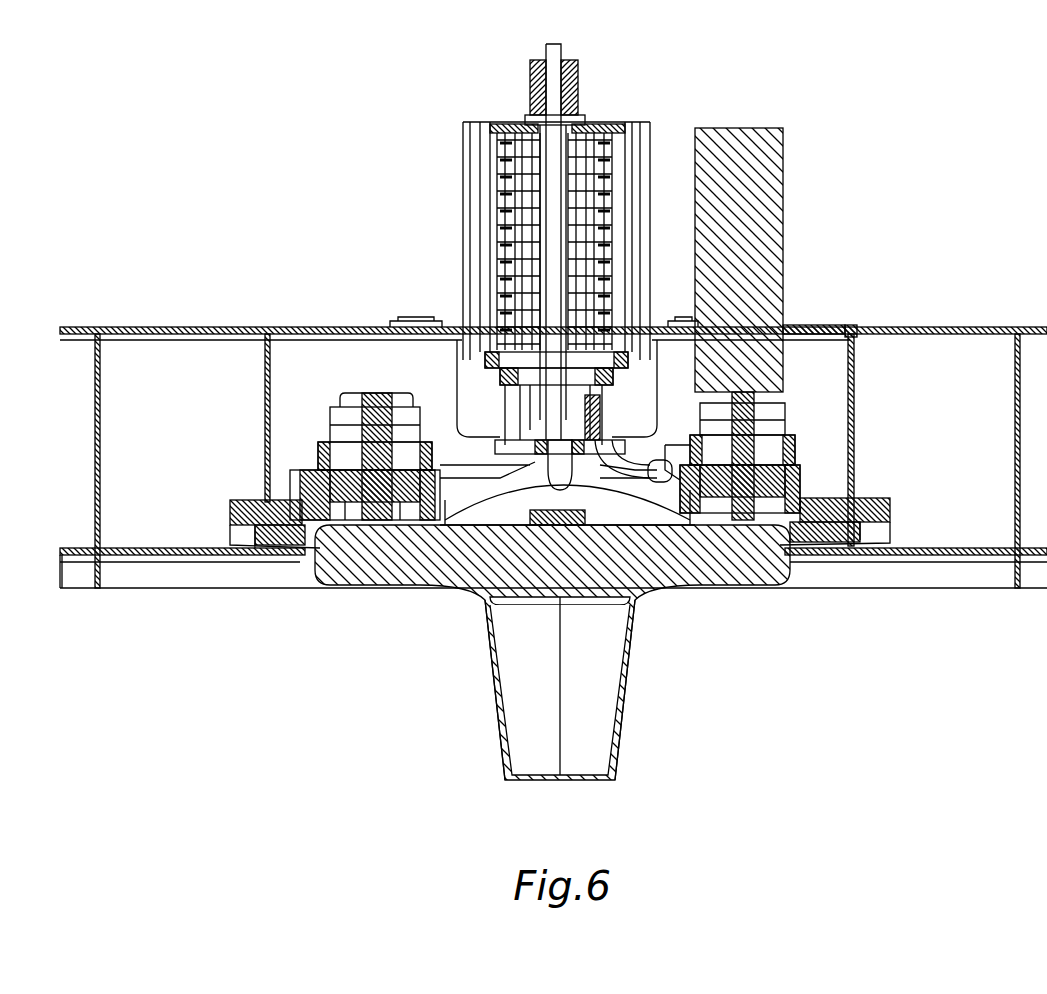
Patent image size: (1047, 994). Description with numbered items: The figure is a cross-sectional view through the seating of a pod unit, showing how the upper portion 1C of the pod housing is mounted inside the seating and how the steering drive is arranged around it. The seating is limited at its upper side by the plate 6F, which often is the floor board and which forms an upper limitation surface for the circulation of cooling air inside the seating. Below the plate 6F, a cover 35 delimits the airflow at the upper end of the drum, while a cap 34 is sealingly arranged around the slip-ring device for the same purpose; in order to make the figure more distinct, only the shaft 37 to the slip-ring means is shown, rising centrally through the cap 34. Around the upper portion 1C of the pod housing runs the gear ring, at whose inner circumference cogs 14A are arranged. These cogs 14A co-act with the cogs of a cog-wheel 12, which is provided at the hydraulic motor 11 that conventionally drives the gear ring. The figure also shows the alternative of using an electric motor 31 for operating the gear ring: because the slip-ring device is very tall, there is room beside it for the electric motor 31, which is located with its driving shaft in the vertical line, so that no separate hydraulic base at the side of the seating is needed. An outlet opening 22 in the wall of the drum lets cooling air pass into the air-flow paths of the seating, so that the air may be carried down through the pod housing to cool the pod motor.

The plate 6F is at (965, 327).
The cover 35 is at (823, 327).
The electric motor 31 is at (762, 191).
The cap 34 is at (465, 178).
The shaft 37 is at (553, 93).
The cogs 14A is at (440, 468).
The hydraulic motor 11 is at (345, 424).
The cog-wheel 12 is at (380, 528).
The upper portion of the pod housing 1C is at (452, 562).
The outlet opening 22 is at (657, 483).